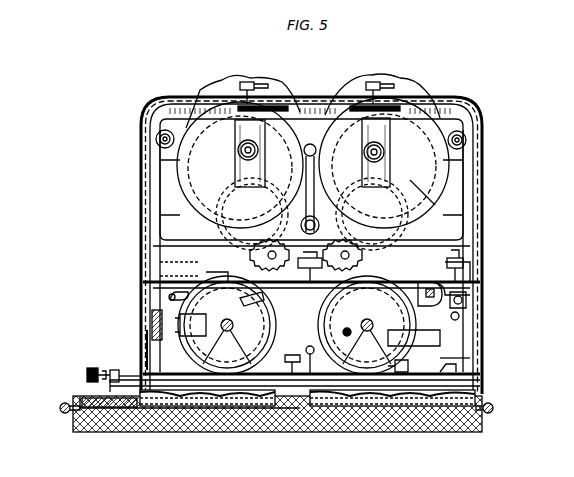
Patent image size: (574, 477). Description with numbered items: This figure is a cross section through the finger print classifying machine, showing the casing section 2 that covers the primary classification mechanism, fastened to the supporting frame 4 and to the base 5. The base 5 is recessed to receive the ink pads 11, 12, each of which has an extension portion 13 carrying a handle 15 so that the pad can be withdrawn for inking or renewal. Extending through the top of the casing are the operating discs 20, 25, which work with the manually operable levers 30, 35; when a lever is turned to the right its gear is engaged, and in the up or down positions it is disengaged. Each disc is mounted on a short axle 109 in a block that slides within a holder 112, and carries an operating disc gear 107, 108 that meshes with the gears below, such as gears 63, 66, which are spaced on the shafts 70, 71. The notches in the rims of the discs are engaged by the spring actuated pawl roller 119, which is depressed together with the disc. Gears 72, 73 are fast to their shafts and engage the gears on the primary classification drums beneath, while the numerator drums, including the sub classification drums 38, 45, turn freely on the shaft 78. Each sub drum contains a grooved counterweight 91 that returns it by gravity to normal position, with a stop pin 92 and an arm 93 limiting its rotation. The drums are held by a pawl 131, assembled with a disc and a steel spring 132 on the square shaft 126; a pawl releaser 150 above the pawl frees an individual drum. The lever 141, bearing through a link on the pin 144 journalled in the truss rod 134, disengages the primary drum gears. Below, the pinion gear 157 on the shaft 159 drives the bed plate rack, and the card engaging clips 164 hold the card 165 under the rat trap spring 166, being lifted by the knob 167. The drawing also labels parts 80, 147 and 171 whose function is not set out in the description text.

The casing section 2 is at (476, 112).
The supporting frame 4 is at (150, 244).
The base 5 is at (76, 432).
The ink pad 11 is at (196, 388).
The ink pad 12 is at (400, 406).
The extension portion 13 is at (84, 396).
The handle 15 is at (58, 406).
The operating disc 20 is at (422, 92).
The operating disc 25 is at (215, 78).
The manually operable lever 30 is at (385, 82).
The manually operable lever 35 is at (250, 80).
The sub classification numerator drum 38 is at (405, 360).
The second sub classification drum 45 is at (179, 330).
The gear 63 is at (222, 226).
The gear 66 is at (405, 226).
The shaft 70 is at (345, 254).
The shaft 71 is at (266, 253).
The gear 72 is at (350, 266).
The gear 73 is at (338, 313).
The shaft 78 is at (367, 325).
The wheel 80 is at (227, 325).
The counterweight 91 is at (307, 331).
The stop pin 92 is at (289, 315).
The arm 93 is at (165, 332).
The operating disc gear 107 is at (433, 196).
The operating disc gear 108 is at (200, 205).
The short axle 109 is at (240, 152).
The holder 112 is at (262, 176).
The spring actuated pawl roller 119 is at (157, 142).
The square shaft 126 is at (460, 316).
The pawl 131 is at (472, 288).
The steel spring 132 is at (468, 300).
The truss rod 134 is at (180, 265).
The lever 141 is at (306, 206).
The pin 144 is at (319, 227).
The pivot 147 is at (317, 151).
The pawl releaser 150 is at (470, 262).
The pinion gear 157 is at (310, 390).
The shaft 159 is at (292, 376).
The card engaging clip 164 is at (147, 365).
The card 165 is at (180, 406).
The rat trap spring 166 is at (128, 372).
The knob 167 is at (90, 368).
The bracket 171 is at (456, 366).